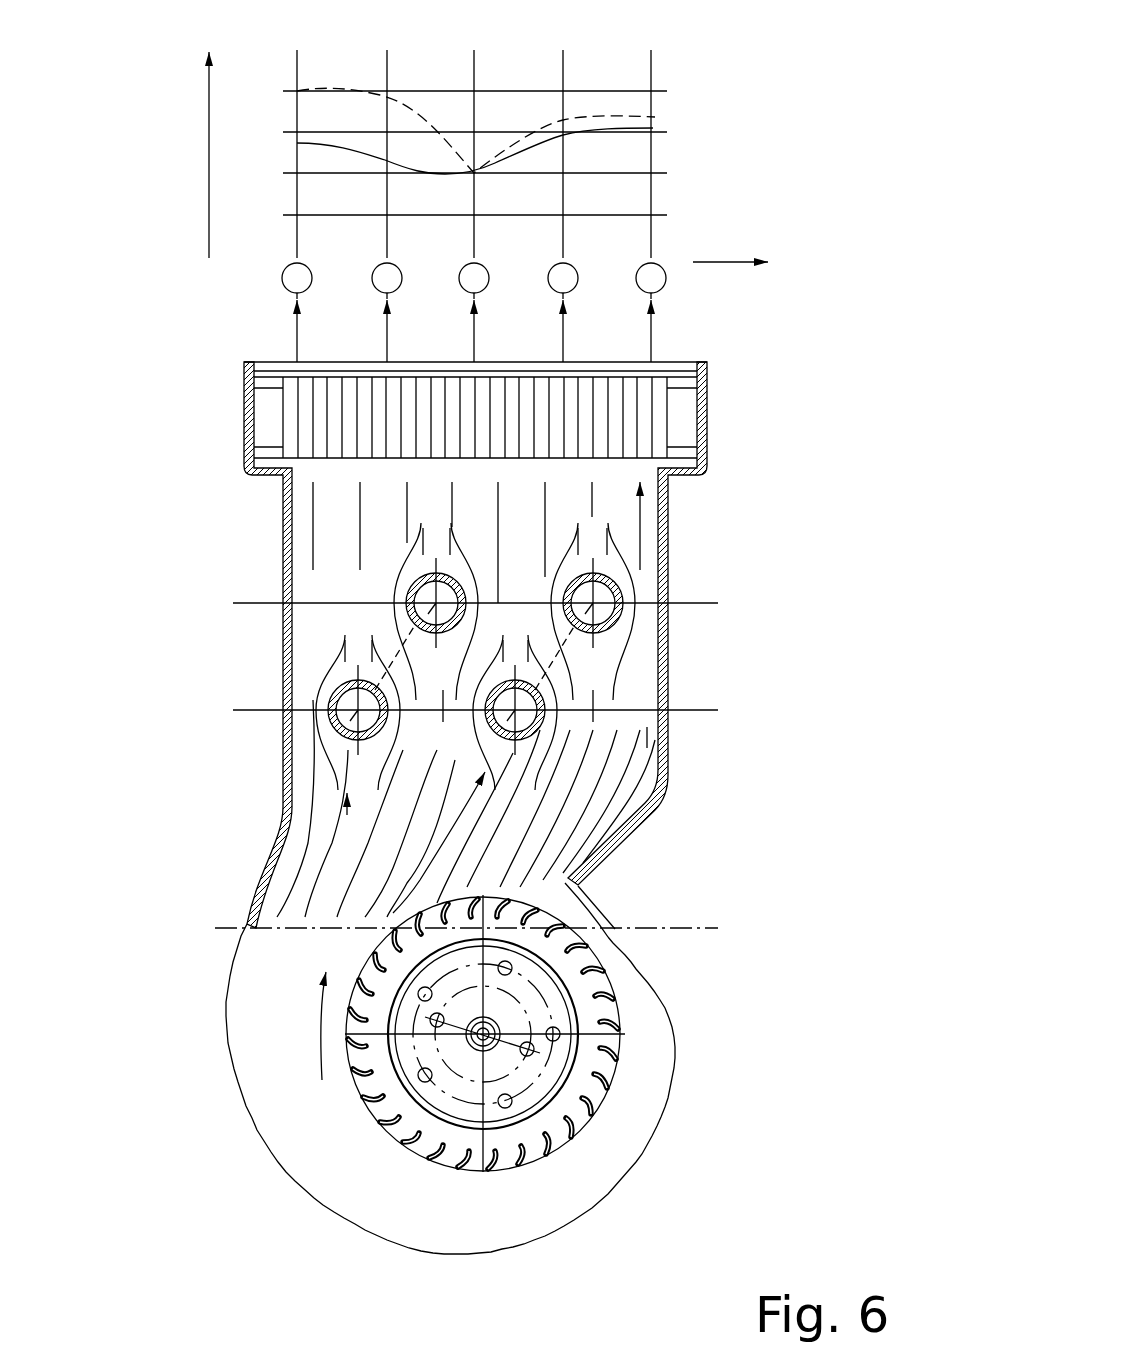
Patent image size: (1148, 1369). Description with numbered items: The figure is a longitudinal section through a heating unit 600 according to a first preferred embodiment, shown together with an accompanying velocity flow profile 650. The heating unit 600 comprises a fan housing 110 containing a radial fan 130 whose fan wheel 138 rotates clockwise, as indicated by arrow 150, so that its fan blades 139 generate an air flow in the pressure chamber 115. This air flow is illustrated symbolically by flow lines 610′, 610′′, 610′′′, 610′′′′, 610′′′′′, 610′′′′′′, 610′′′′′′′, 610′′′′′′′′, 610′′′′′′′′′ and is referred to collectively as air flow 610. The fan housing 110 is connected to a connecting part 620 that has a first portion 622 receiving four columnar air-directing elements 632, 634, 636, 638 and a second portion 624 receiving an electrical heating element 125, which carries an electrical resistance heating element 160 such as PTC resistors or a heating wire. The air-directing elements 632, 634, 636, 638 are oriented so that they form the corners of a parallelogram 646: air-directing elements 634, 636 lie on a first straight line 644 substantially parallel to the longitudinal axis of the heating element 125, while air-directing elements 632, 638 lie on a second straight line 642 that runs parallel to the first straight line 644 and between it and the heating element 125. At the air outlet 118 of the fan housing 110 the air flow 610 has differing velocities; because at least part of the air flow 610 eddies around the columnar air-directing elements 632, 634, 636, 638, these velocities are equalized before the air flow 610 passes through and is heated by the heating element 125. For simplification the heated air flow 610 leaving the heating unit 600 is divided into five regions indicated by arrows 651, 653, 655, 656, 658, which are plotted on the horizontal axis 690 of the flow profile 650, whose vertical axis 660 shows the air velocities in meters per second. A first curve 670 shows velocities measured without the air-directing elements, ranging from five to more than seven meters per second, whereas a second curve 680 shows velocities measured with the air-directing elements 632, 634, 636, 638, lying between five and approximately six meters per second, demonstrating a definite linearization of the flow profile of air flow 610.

The fan housing 110 is at (217, 1043).
The pressure chamber 115 is at (618, 1108).
The air outlet 118 is at (318, 923).
The electrical heating element 125 is at (650, 408).
The radial fan 130 is at (463, 1035).
The fan wheel 138 is at (603, 1002).
The fan blades 139 is at (573, 895).
The arrow 150 is at (320, 1062).
The electrical resistance heating element 160 is at (612, 478).
The heating unit 600 is at (722, 388).
The air flow 610 is at (502, 826).
The flow line 610′ is at (315, 763).
The flow line 610′′ is at (340, 817).
The flow line 610′′′ is at (368, 843).
The flow line 610′′′′ is at (393, 868).
The flow line 610′′′′′ is at (433, 907).
The flow line 610′′′′′′ is at (600, 775).
The flow line 610′′′′′′′ is at (600, 815).
The flow line 610′′′′′′′′ is at (600, 855).
The flow line 610′′′′′′′′′ is at (600, 898).
The connecting part 620 is at (233, 522).
The first portion 622 is at (668, 573).
The second portion 624 is at (244, 415).
The air-directing element 632 is at (403, 601).
The air-directing element 634 is at (325, 710).
The air-directing element 636 is at (548, 703).
The air-directing element 638 is at (626, 605).
The second straight line 642 is at (253, 603).
The first straight line 644 is at (253, 710).
The parallelogram 646 is at (320, 672).
The flow profile 650 is at (617, 45).
The arrow 651 is at (297, 350).
The arrow 653 is at (387, 350).
The arrow 655 is at (474, 350).
The arrow 656 is at (563, 350).
The arrow 658 is at (651, 350).
The vertical axis 660 is at (208, 150).
The first curve 670 is at (627, 117).
The second curve 680 is at (583, 140).
The horizontal axis 690 is at (712, 262).